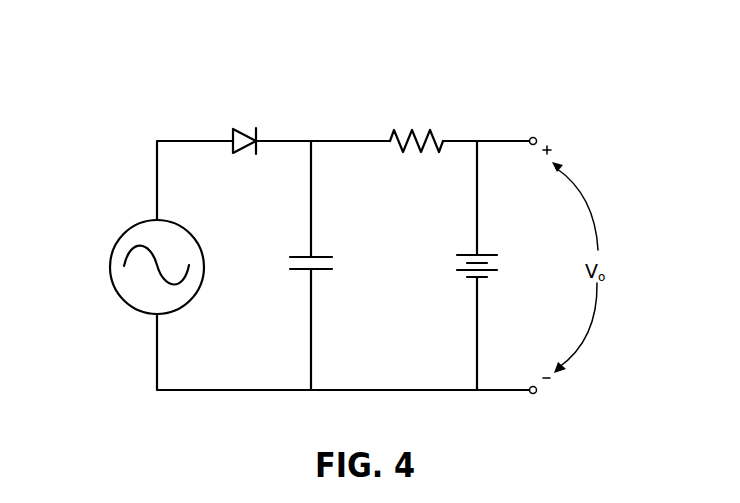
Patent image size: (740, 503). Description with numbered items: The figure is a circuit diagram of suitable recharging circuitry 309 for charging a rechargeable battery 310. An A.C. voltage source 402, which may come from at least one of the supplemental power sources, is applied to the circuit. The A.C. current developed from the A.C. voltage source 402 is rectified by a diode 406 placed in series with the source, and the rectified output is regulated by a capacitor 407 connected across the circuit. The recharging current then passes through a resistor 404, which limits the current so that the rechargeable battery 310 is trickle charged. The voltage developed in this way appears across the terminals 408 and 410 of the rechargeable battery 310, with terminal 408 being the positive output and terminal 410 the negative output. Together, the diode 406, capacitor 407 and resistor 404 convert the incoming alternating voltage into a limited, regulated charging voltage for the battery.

The recharging circuitry 309 is at (124, 105).
The A.C. voltage source 402 is at (123, 232).
The resistor 404 is at (430, 124).
The diode 406 is at (245, 129).
The capacitor 407 is at (302, 253).
The terminal 408 is at (537, 141).
The terminal 410 is at (536, 393).
The rechargeable battery 310 is at (458, 262).